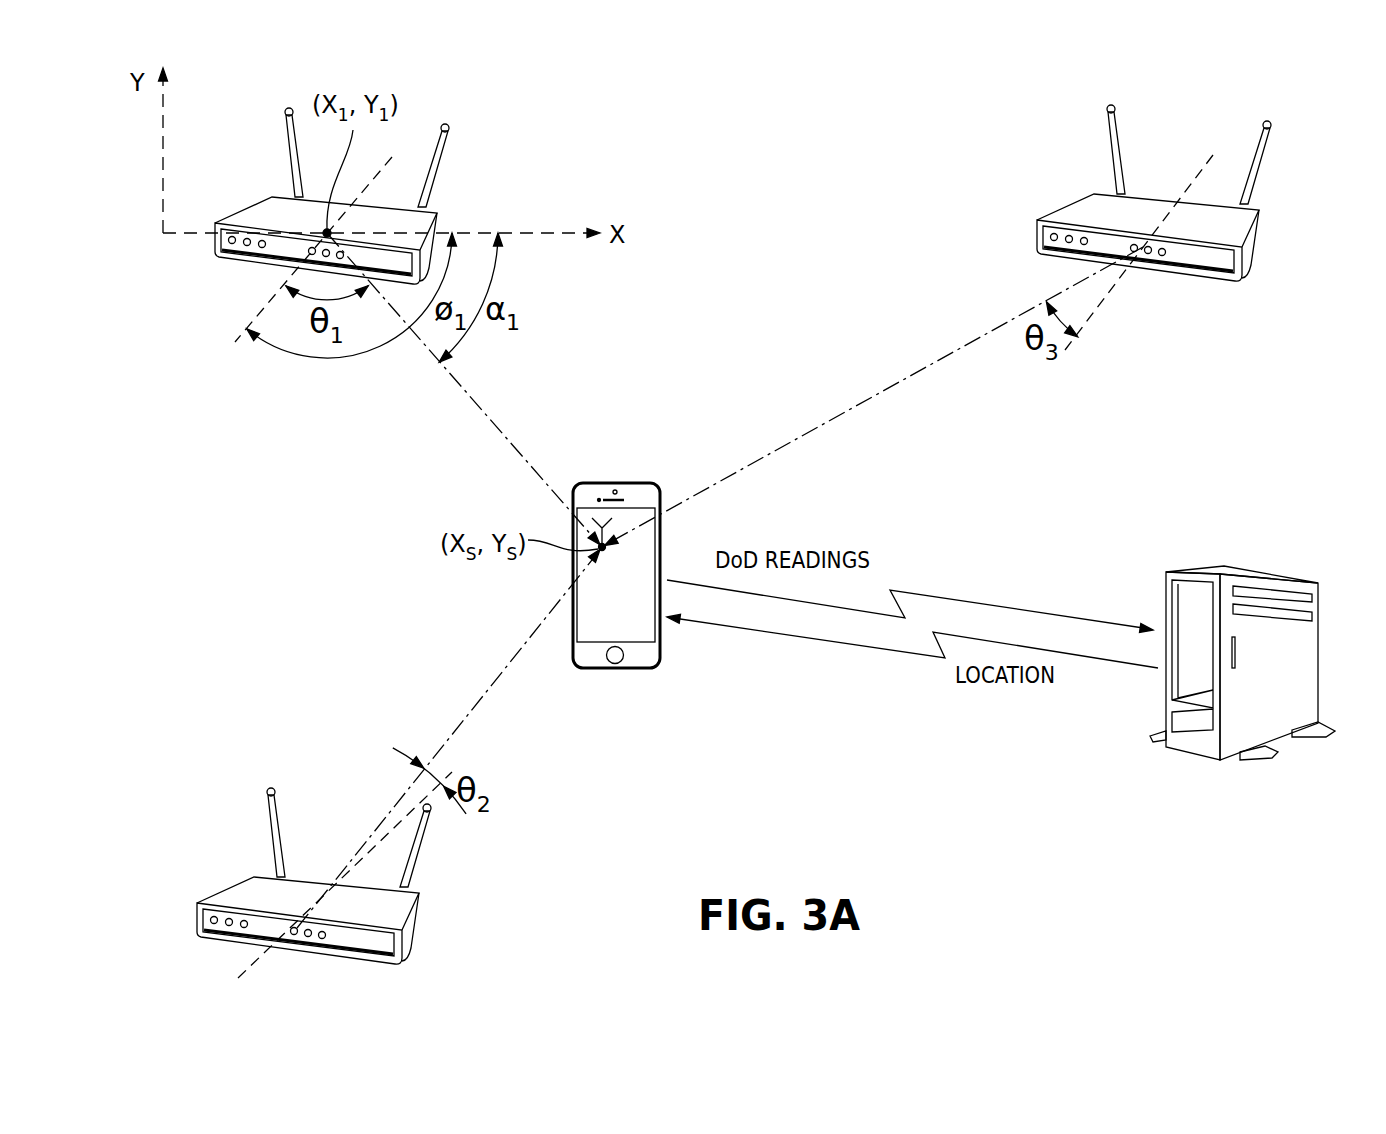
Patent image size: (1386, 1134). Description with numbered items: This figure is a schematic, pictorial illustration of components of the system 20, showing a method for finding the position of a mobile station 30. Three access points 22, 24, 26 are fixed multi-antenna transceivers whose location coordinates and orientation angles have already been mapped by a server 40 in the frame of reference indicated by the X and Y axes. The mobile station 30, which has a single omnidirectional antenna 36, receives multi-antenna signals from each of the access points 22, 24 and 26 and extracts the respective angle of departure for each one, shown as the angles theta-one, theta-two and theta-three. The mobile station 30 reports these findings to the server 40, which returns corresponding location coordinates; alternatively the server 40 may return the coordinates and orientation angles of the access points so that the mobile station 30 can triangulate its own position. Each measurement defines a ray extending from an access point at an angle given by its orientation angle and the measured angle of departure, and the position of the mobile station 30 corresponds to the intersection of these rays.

The system 20 is at (1048, 877).
The access point 22 is at (258, 215).
The access point 24 is at (1263, 210).
The access point 26 is at (421, 893).
The mobile station 30 is at (583, 658).
The antenna 36 is at (592, 516).
The server 40 is at (1318, 640).